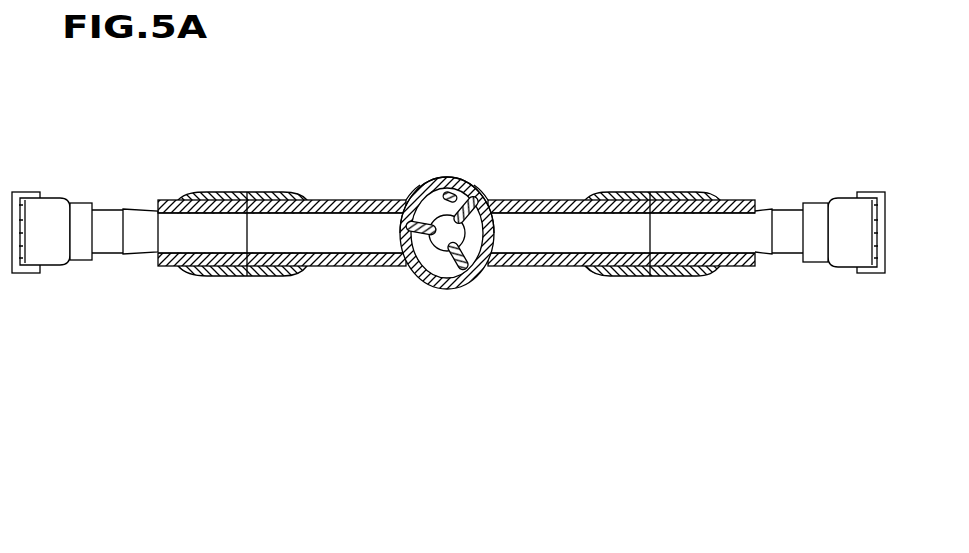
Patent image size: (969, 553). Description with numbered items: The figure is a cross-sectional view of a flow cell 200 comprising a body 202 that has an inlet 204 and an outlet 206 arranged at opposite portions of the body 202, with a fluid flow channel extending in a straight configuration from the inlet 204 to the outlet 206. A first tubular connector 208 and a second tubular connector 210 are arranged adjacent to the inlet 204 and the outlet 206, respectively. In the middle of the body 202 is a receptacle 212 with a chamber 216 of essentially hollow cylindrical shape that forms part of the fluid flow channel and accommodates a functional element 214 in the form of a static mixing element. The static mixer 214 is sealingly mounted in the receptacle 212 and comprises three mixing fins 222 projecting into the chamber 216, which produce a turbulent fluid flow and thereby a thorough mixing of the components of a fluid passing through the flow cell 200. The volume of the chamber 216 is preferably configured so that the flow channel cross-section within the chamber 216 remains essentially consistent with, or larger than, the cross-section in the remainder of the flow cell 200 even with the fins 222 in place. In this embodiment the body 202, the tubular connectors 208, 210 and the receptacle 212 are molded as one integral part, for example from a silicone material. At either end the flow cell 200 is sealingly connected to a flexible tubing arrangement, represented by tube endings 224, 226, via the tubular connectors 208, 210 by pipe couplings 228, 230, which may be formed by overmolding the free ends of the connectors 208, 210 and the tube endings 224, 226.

The flow cell 200 is at (494, 114).
The body 202 is at (477, 317).
The inlet 204 is at (412, 242).
The outlet 206 is at (478, 248).
The first tubular connector 208 is at (333, 200).
The second tubular connector 210 is at (548, 200).
The receptacle 212 is at (416, 170).
The static mixing element 214 is at (430, 297).
The chamber 216 is at (462, 187).
The mixing fins 222 is at (497, 200).
The tube ending 224 is at (93, 280).
The tube ending 226 is at (810, 284).
The pipe coupling 228 is at (245, 192).
The pipe coupling 230 is at (662, 190).